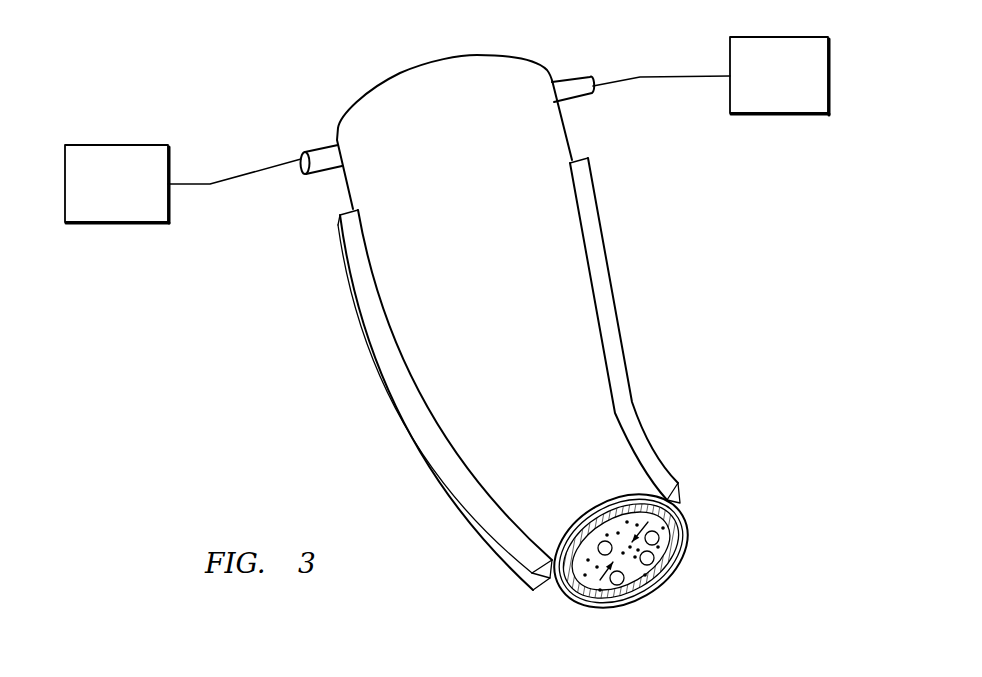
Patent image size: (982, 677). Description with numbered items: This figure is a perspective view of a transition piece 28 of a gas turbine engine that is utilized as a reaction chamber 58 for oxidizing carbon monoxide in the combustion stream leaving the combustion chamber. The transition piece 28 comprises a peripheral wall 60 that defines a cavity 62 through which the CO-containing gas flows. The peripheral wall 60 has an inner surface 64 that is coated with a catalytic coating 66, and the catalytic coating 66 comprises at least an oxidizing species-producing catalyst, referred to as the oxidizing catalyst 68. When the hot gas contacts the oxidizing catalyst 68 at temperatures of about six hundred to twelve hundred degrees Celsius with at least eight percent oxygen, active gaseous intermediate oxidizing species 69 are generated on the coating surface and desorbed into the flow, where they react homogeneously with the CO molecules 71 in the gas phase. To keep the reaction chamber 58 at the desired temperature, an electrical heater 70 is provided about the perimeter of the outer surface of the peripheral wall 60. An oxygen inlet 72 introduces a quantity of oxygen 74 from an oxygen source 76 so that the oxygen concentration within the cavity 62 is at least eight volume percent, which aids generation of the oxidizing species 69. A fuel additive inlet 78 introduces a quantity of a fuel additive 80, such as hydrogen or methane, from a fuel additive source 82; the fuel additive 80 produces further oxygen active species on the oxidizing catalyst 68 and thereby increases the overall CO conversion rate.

The transition piece 28 is at (635, 325).
The reaction chamber 58 is at (428, 417).
The peripheral wall 60 is at (583, 603).
The cavity 62 is at (622, 563).
The inner surface 64 is at (613, 600).
The catalytic coating 66 is at (660, 540).
The oxidizing catalyst 68 is at (655, 564).
The gaseous intermediate oxidizing species 69 is at (653, 523).
The electrical heater 70 is at (607, 232).
The CO molecules 71 is at (598, 548).
The oxygen inlet 72 is at (567, 77).
The oxygen 74 is at (772, 55).
The oxygen source 76 is at (772, 113).
The fuel additive inlet 78 is at (320, 146).
The fuel additive 80 is at (117, 203).
The fuel additive source 82 is at (117, 145).